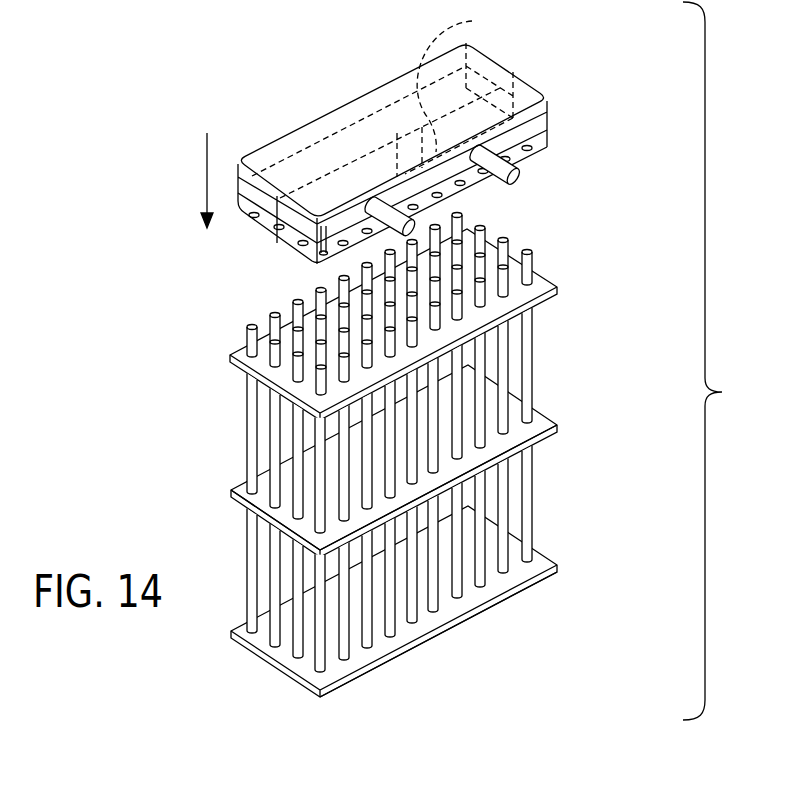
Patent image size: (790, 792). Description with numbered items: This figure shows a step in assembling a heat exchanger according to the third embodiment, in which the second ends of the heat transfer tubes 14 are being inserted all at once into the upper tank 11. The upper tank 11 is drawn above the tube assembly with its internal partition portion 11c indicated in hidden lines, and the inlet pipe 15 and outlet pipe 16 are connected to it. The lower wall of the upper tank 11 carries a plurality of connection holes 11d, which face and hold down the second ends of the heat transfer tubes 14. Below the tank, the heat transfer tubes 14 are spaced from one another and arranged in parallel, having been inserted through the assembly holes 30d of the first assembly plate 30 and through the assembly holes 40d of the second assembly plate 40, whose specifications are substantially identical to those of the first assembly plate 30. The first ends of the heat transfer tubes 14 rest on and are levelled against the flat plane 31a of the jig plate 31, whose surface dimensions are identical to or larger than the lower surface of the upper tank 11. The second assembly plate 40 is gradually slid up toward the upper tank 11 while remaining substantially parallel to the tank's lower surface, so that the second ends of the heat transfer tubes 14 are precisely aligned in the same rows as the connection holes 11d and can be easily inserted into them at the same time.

The upper tank 11 is at (523, 74).
The partition portion 11c is at (387, 100).
The connection holes 11d is at (548, 137).
The inlet pipe 15 is at (382, 210).
The outlet pipe 16 is at (526, 174).
The second assembly plate 40 is at (566, 280).
The assembly holes 40d is at (538, 263).
The heat transfer tubes 14 is at (538, 346).
The first assembly plate 30 is at (222, 481).
The assembly holes 30d is at (243, 515).
The jig plate 31 is at (548, 533).
The flat plane 31a is at (420, 628).